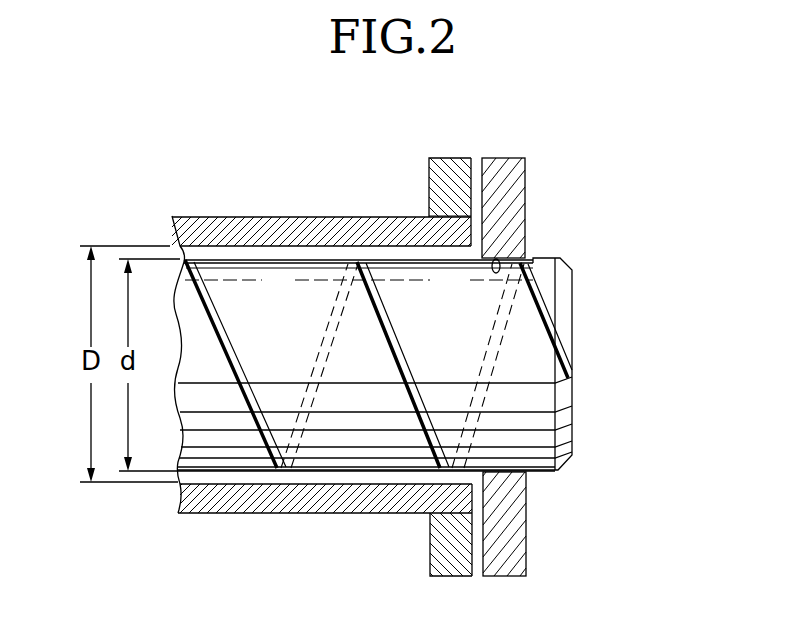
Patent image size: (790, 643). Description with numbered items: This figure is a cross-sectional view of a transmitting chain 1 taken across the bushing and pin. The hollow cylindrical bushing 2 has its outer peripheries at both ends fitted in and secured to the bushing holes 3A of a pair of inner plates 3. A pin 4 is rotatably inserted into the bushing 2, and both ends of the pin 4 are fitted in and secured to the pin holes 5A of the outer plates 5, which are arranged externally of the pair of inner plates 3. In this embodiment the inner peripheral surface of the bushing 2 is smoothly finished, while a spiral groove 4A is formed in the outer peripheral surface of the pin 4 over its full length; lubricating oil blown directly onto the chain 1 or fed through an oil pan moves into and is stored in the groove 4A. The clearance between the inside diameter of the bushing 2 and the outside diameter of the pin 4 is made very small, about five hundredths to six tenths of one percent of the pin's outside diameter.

The transmitting chain 1 is at (545, 483).
The hollow cylindrical bushing 2 is at (264, 230).
The inner plate 3 is at (452, 168).
The bushing hole 3A is at (450, 226).
The pin 4 is at (557, 306).
The spiral groove 4A is at (407, 358).
The outer plate 5 is at (512, 156).
The pin hole 5A is at (494, 262).